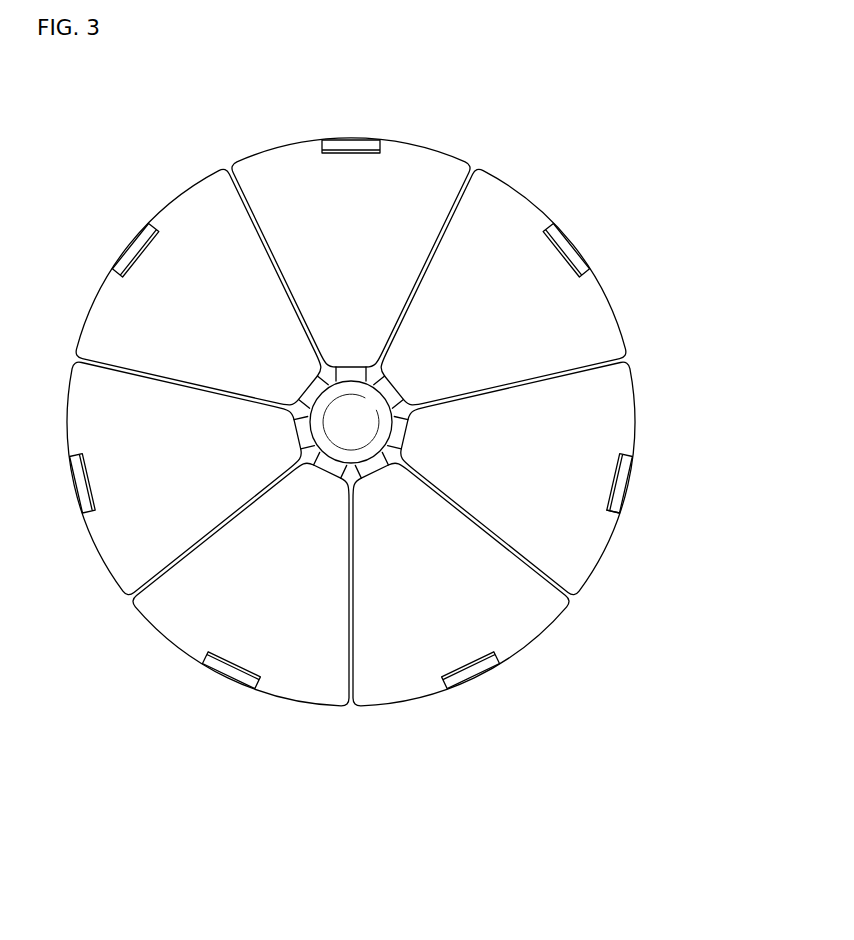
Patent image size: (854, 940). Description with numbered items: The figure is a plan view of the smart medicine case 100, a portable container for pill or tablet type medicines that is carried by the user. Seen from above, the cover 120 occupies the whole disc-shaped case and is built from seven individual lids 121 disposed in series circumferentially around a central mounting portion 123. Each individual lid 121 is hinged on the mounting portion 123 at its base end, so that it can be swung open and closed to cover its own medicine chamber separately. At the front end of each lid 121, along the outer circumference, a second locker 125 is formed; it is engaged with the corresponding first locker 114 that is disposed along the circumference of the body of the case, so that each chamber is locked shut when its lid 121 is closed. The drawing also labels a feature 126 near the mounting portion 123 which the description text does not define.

The smart medicine case 100 is at (163, 104).
The cover 120 is at (559, 199).
The individual lid 121 is at (622, 408).
The second locker 125 is at (630, 472).
The first locker 114 is at (630, 495).
The mounting portion 123 is at (332, 453).
The connecting portion 126 is at (372, 468).